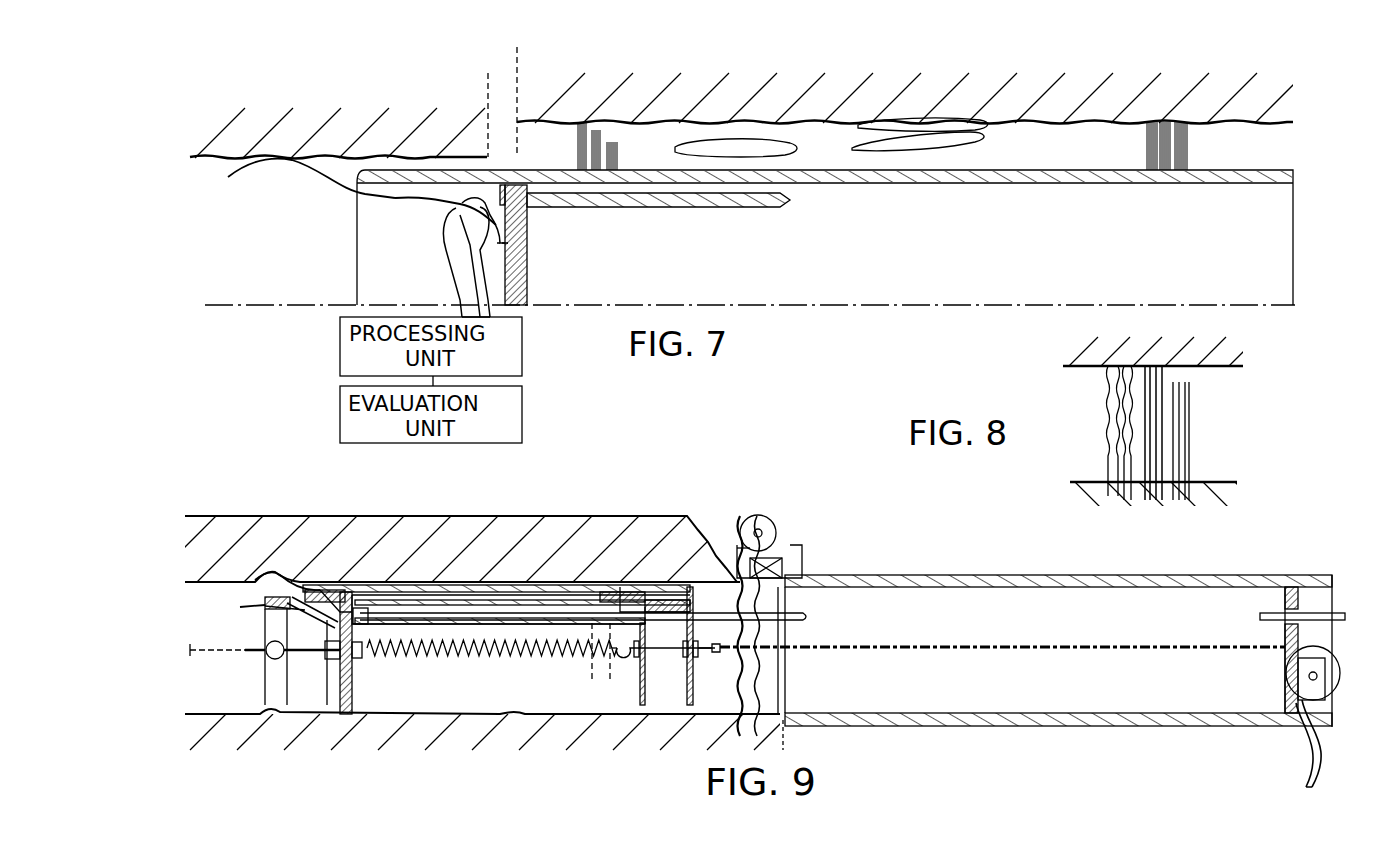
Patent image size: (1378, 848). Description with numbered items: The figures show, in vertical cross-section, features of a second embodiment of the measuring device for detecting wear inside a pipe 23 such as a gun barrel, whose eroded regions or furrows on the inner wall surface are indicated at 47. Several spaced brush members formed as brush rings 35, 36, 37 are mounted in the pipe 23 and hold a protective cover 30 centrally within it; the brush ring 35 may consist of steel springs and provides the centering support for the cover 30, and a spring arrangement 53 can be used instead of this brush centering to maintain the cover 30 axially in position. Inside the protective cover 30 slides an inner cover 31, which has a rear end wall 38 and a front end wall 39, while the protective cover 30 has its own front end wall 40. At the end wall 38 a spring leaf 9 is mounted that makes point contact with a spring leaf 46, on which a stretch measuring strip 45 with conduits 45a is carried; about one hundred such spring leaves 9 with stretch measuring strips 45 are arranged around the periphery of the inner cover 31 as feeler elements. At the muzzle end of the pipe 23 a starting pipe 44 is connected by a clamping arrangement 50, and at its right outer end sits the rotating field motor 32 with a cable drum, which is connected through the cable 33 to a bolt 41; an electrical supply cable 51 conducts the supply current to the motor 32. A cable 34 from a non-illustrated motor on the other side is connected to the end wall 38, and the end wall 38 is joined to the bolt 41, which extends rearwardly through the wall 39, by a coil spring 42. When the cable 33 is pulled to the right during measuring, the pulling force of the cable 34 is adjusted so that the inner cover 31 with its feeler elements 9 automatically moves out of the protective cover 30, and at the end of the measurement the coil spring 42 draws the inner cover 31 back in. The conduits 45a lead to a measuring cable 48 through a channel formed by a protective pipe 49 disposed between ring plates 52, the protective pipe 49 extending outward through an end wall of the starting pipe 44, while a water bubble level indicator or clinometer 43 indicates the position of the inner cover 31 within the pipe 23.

In FIG. 7, the spring leaf 9 is at (304, 165).
In FIG. 9, the spring leaf 9 is at (300, 582).
In FIG. 7, the pipe 23 is at (208, 162).
In FIG. 8, the pipe 23 is at (1080, 368).
In FIG. 9, the pipe 23 is at (224, 534).
In FIG. 7, the protective cover 30 is at (893, 185).
In FIG. 8, the protective cover 30 is at (1224, 480).
In FIG. 9, the protective cover 30 is at (500, 598).
In FIG. 7, the inner cover 31 is at (748, 209).
In FIG. 9, the inner cover 31 is at (455, 585).
In FIG. 9, the rotating field motor 32 is at (1290, 675).
In FIG. 9, the cable 33 is at (1040, 645).
In FIG. 9, the cable 34 is at (208, 654).
In FIG. 7, the brush ring 35 is at (577, 148).
In FIG. 8, the brush ring 35 is at (1112, 440).
In FIG. 7, the brush ring 36 is at (596, 184).
In FIG. 8, the brush ring 36 is at (1152, 408).
In FIG. 7, the brush ring 37 is at (618, 160).
In FIG. 8, the brush ring 37 is at (1180, 436).
In FIG. 7, the end wall 38 is at (528, 226).
In FIG. 9, the end wall 38 is at (353, 700).
In FIG. 9, the front end wall 39 is at (640, 688).
In FIG. 9, the front end wall 40 is at (694, 683).
In FIG. 9, the bolt 41 is at (664, 652).
In FIG. 9, the coil spring 42 is at (505, 657).
In FIG. 9, the water bubble level indicator 43 is at (596, 664).
In FIG. 9, the starting pipe 44 is at (955, 576).
In FIG. 7, the stretch measuring strip 45 is at (452, 222).
In FIG. 9, the stretch measuring strip 45 is at (325, 590).
In FIG. 7, the conduits 45a is at (470, 306).
In FIG. 7, the spring leaf 46 is at (410, 207).
In FIG. 7, the eroded regions 47 is at (795, 151).
In FIG. 9, the measuring cable 48 is at (802, 622).
In FIG. 9, the protective pipe 49 is at (437, 658).
In FIG. 9, the clamping arrangement 50 is at (792, 560).
In FIG. 9, the electrical supply cable 51 is at (1310, 752).
In FIG. 9, the ring plates 52 is at (255, 606).
In FIG. 9, the spring arrangement 53 is at (575, 585).